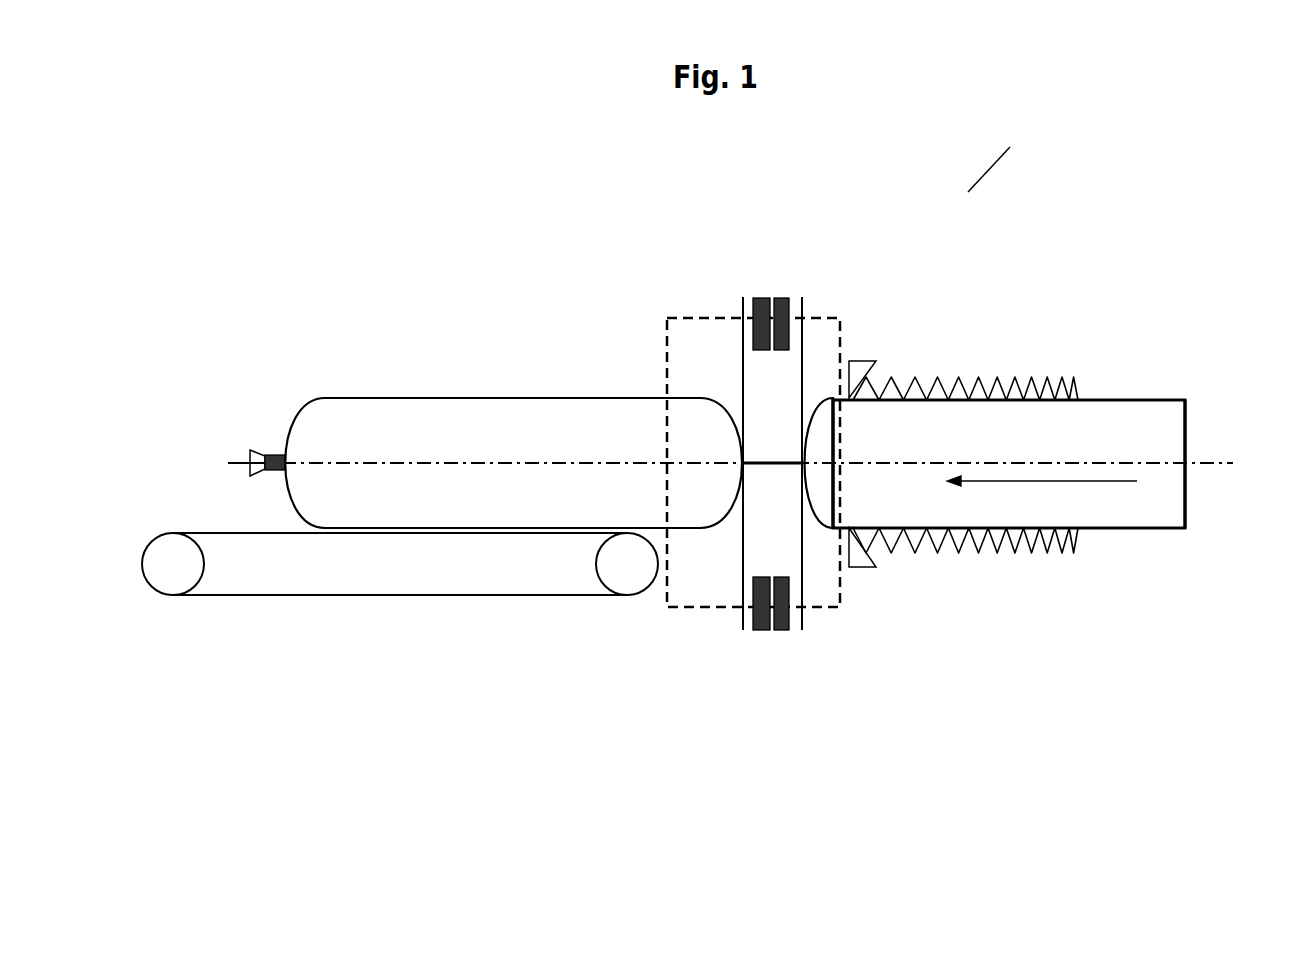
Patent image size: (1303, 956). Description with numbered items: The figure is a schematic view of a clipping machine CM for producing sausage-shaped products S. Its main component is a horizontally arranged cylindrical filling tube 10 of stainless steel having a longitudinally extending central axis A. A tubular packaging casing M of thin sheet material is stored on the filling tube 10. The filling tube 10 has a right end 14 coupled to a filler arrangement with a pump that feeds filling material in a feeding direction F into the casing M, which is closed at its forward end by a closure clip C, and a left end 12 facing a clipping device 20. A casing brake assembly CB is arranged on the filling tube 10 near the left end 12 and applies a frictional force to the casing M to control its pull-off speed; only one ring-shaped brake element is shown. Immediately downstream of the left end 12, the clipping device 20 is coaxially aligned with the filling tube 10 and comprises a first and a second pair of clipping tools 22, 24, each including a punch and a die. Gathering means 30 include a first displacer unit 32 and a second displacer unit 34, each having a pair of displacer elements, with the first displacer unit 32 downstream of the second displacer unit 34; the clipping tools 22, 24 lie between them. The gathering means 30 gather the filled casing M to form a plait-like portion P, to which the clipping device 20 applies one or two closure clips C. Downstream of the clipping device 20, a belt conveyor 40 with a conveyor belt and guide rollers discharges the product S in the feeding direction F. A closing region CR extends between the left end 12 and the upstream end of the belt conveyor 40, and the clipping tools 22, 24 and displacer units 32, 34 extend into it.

The filling tube 10 is at (1043, 467).
The left end 12 is at (840, 493).
The right end 14 is at (1185, 435).
The clipping device 20 is at (553, 239).
The first pair of clipping tools 22 is at (780, 577).
The second pair of clipping tools 24 is at (760, 352).
The gathering means 30 is at (877, 496).
The first displacer unit 32 is at (743, 491).
The second displacer unit 34 is at (802, 560).
The belt conveyor 40 is at (477, 619).
The closure clip C is at (272, 457).
The sausage-shaped product S is at (465, 398).
The closing region CR is at (665, 443).
The plait-like portion P is at (763, 462).
The casing brake assembly CB is at (849, 397).
The tubular packaging casing M is at (1040, 375).
The feeding direction F is at (1042, 496).
The central axis A is at (1202, 465).
The clipping machine CM is at (975, 185).